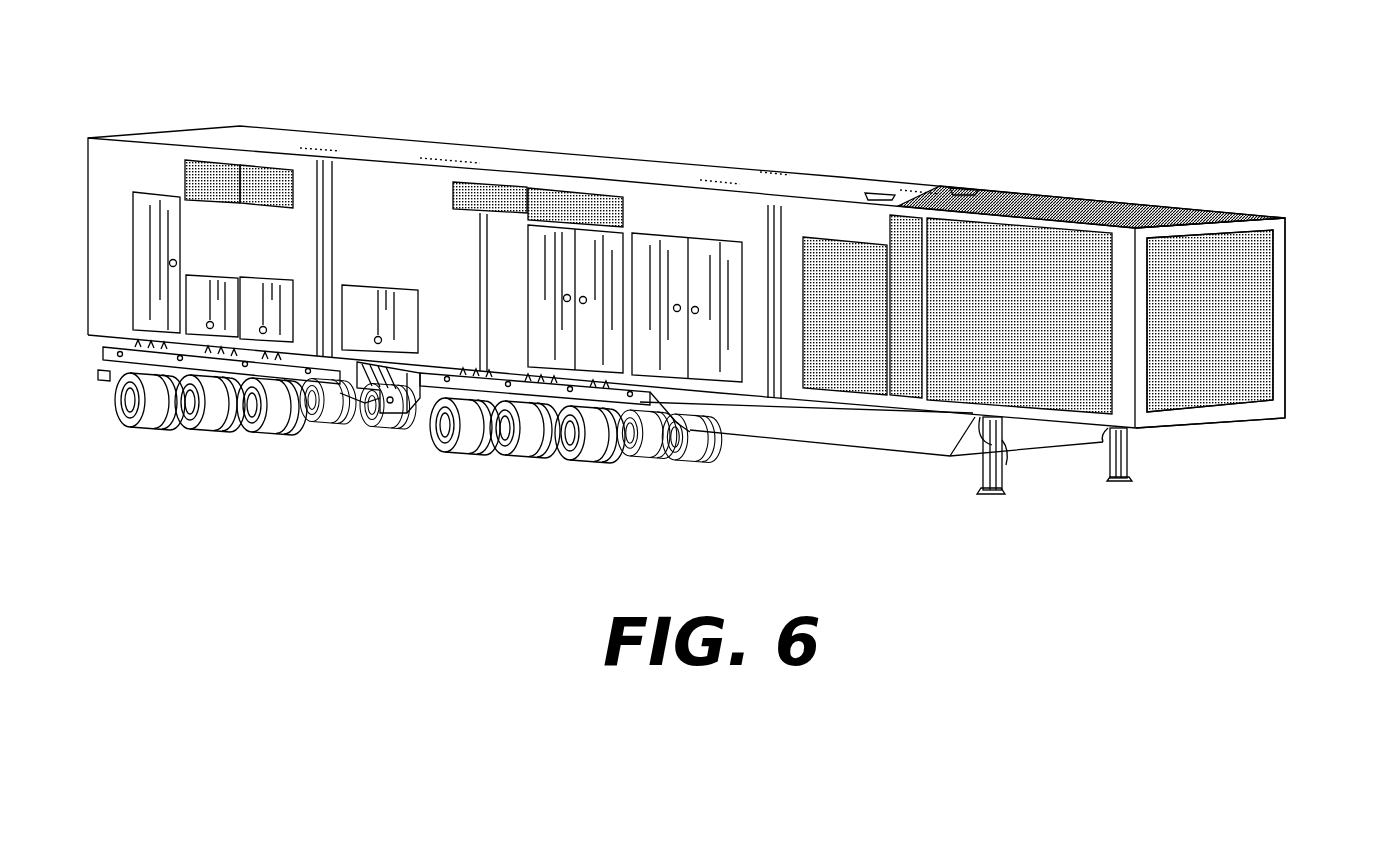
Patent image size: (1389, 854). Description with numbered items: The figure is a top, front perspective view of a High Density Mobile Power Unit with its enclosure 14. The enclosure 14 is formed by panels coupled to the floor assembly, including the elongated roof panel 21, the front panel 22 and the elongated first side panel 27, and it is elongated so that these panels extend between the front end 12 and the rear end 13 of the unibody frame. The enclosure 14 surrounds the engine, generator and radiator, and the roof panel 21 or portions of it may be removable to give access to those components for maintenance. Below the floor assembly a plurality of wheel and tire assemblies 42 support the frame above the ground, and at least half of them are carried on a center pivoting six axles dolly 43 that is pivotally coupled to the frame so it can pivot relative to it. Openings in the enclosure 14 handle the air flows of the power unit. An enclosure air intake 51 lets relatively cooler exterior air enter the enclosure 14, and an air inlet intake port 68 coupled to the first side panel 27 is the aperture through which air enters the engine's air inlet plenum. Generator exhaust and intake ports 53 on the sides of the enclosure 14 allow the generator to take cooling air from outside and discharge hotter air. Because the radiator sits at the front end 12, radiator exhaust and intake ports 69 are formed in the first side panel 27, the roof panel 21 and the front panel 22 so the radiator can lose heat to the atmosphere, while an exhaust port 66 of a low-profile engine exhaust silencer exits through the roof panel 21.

The front end 12 is at (1296, 246).
The rear end 13 is at (81, 145).
The enclosure 14 is at (1286, 216).
The roof panel 21 is at (591, 167).
The front panel 22 is at (1282, 278).
The first side panel 27 is at (103, 252).
The wheel and tire assemblies 42 is at (197, 415).
The center pivoting six axles dolly 43 is at (415, 412).
The enclosure air intake 51 is at (850, 372).
The generator exhaust and intake ports 53 is at (263, 200).
The exhaust port 66 is at (882, 192).
The air inlet intake port 68 is at (468, 192).
The radiator exhaust and intake ports 69 is at (1005, 265).